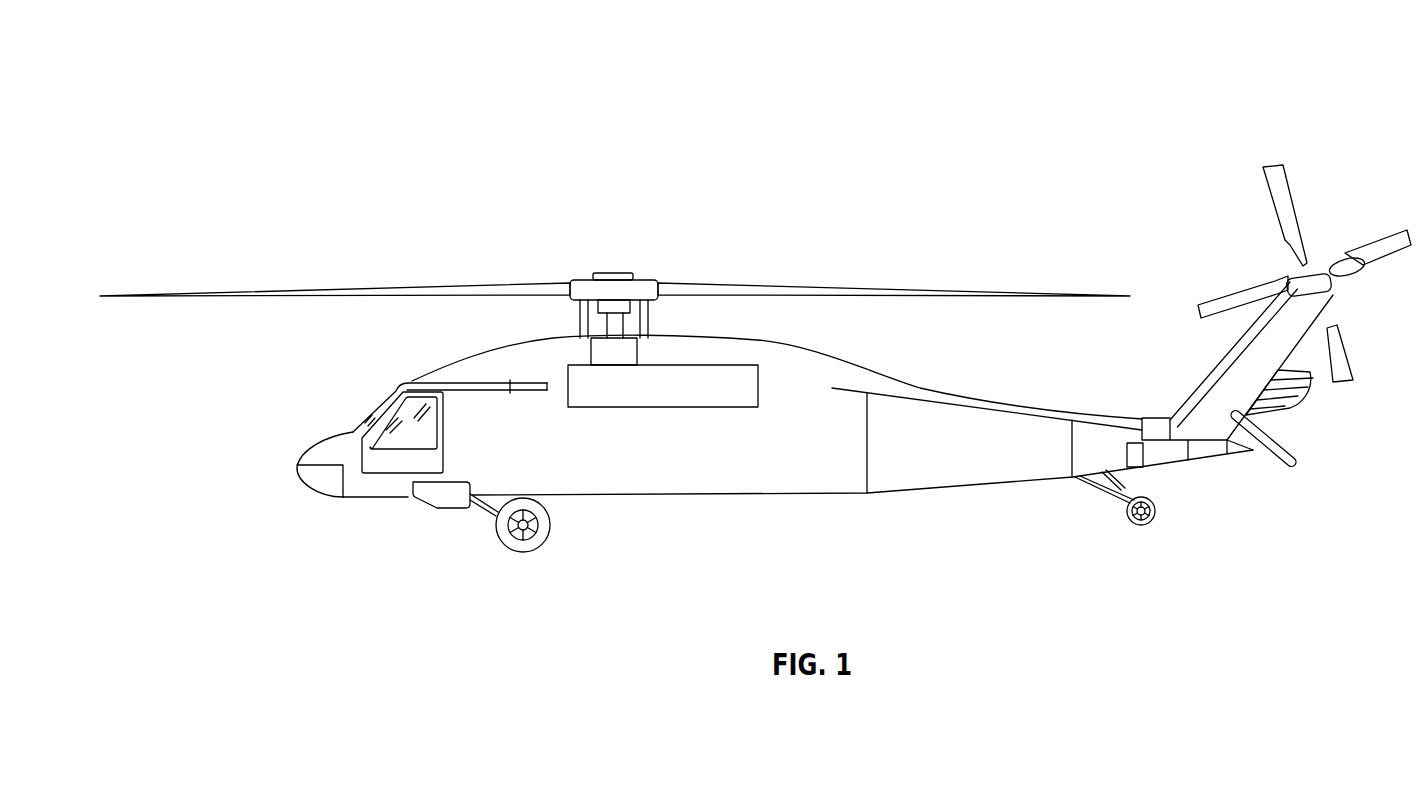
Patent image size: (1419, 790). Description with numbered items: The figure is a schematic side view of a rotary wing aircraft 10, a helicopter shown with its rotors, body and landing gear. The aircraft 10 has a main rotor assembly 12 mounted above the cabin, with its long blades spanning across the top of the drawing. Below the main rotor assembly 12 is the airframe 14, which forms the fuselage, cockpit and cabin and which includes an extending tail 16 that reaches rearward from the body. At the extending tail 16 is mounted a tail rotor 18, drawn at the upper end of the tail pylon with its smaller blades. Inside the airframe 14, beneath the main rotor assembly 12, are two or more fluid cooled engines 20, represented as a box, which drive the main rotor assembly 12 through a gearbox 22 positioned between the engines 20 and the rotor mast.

The rotary wing aircraft 10 is at (211, 99).
The main rotor assembly 12 is at (585, 278).
The airframe 14 is at (687, 472).
The extending tail 16 is at (1160, 452).
The tail rotor 18 is at (1277, 185).
The fluid cooled engines 20 is at (623, 395).
The gearbox 22 is at (605, 355).